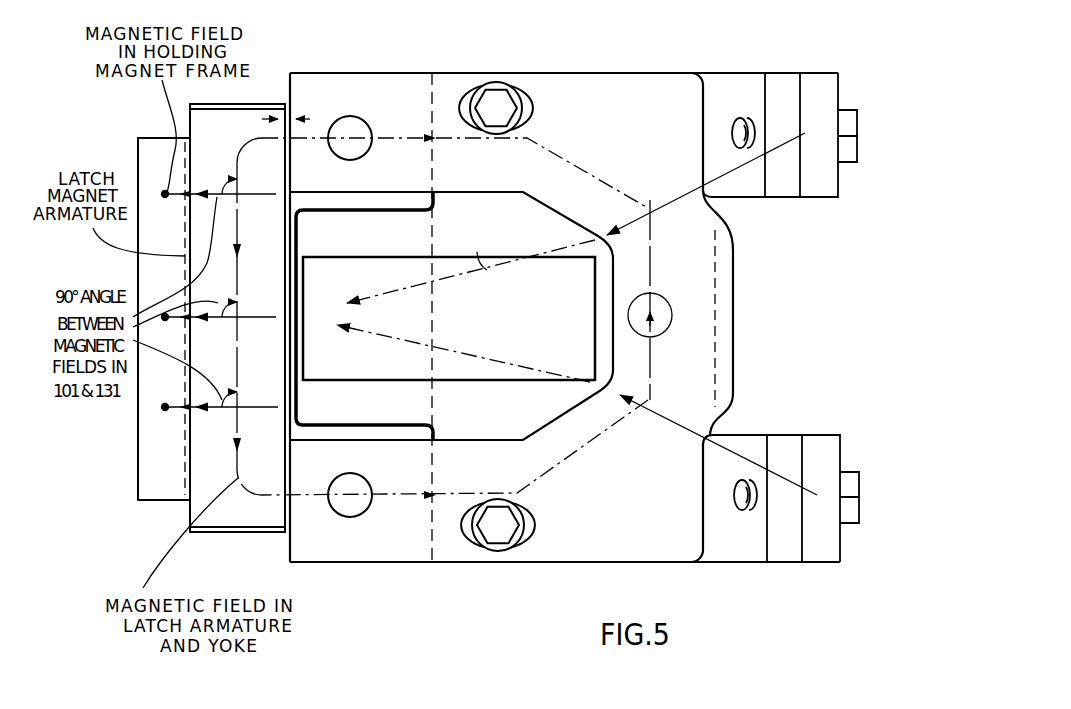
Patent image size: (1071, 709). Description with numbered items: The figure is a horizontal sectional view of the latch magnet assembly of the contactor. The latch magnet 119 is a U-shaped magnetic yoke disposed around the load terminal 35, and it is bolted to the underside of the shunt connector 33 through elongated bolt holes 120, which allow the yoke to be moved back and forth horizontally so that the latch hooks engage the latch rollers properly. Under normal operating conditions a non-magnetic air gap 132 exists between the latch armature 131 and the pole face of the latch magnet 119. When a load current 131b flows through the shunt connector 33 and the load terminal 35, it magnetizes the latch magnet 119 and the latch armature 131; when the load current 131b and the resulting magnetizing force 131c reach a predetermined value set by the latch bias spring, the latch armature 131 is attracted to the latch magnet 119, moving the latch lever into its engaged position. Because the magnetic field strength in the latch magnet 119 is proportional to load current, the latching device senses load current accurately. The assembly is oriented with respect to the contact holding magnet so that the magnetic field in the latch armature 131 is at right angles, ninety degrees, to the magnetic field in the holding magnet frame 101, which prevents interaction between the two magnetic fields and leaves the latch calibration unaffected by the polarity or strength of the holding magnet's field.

The latch magnet 119 is at (450, 74).
The elongated bolt holes 120 is at (522, 110).
The shunt connector 33 is at (748, 188).
The load terminal 35 is at (448, 372).
The latch armature 131 is at (212, 515).
The holding magnet frame 101 is at (148, 442).
The non-magnetic gap 132 is at (268, 117).
The magnetizing force 131c is at (620, 198).
The load current 131b is at (650, 218).